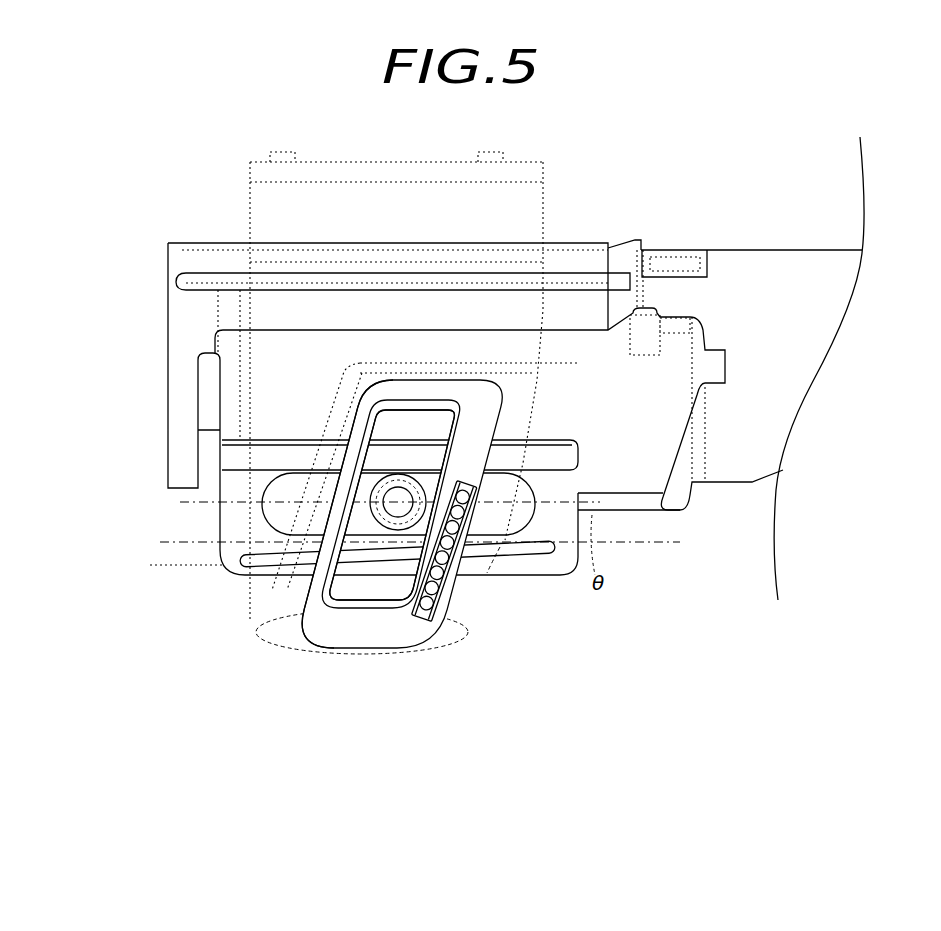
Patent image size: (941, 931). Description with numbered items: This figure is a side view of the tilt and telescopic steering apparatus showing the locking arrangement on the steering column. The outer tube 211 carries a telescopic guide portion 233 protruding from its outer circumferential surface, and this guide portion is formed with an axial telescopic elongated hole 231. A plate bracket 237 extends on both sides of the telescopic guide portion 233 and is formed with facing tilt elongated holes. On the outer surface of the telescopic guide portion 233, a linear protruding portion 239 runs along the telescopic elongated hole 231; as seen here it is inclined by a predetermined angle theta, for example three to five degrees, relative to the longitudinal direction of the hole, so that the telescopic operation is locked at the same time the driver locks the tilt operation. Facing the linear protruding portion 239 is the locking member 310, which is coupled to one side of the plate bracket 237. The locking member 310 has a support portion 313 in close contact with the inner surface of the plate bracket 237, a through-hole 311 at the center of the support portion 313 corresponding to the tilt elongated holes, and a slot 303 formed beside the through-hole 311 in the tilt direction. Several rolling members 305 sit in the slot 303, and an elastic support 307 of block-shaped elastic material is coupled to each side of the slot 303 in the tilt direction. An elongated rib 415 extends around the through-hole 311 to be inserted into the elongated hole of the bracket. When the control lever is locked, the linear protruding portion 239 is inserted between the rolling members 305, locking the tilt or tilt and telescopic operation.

The outer tube 211 is at (755, 270).
The telescopic elongated hole 231 is at (268, 493).
The telescopic guide portion 233 is at (563, 580).
The plate bracket 237 is at (432, 645).
The linear protruding portion 239 is at (526, 556).
The slot 303 is at (447, 587).
The rolling members 305 is at (450, 602).
The elastic support 307 is at (442, 623).
The locking member 310 is at (341, 556).
The through-hole 311 is at (366, 584).
The support portion 313 is at (313, 618).
The elongated rib 415 is at (330, 588).